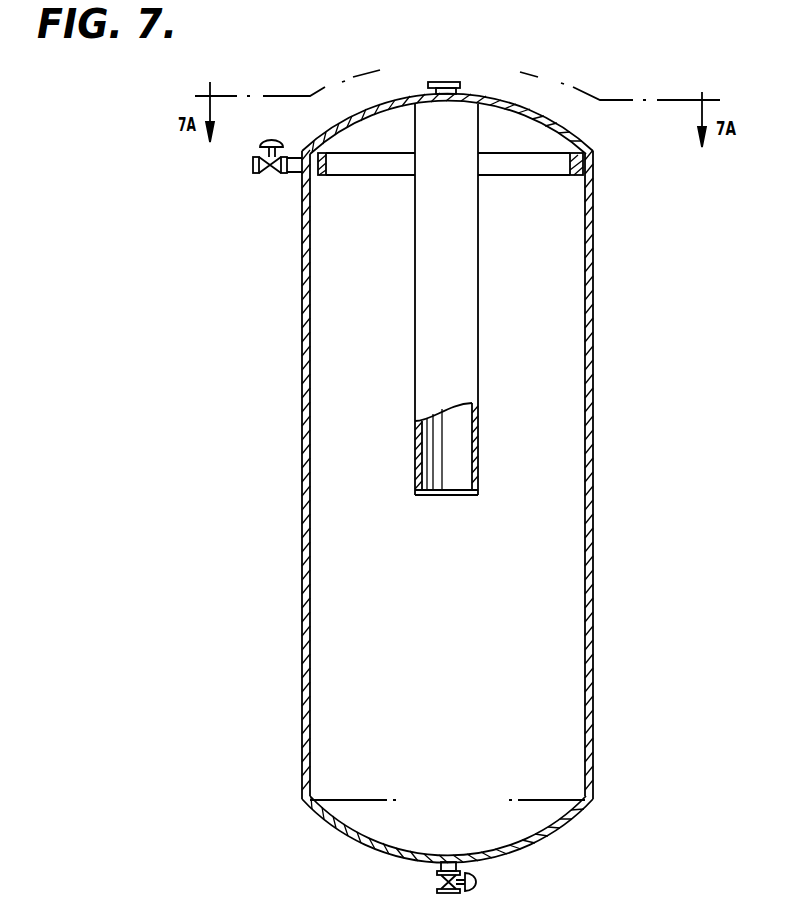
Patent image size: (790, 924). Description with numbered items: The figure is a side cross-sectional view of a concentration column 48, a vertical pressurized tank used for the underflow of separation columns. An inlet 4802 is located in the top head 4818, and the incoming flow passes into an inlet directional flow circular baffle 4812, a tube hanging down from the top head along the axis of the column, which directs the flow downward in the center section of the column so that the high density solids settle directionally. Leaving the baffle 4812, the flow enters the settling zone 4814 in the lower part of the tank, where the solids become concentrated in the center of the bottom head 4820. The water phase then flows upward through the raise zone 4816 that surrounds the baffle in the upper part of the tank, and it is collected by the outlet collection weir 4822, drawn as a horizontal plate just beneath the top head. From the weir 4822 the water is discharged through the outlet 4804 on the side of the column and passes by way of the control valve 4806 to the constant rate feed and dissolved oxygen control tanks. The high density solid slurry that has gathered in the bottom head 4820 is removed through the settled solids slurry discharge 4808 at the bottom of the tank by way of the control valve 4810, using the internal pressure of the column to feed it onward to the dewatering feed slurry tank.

The concentration column 48 is at (492, 448).
The inlet 4802 is at (447, 80).
The outlet 4804 is at (292, 173).
The control valve 4806 is at (272, 138).
The settled solids slurry discharge 4808 is at (437, 871).
The control valve 4810 is at (476, 877).
The inlet directional flow circular baffle 4812 is at (475, 332).
The settling zone 4814 is at (462, 594).
The raise zone 4816 is at (377, 323).
The top head 4818 is at (525, 108).
The bottom head 4820 is at (553, 830).
The outlet collection weir 4822 is at (583, 163).